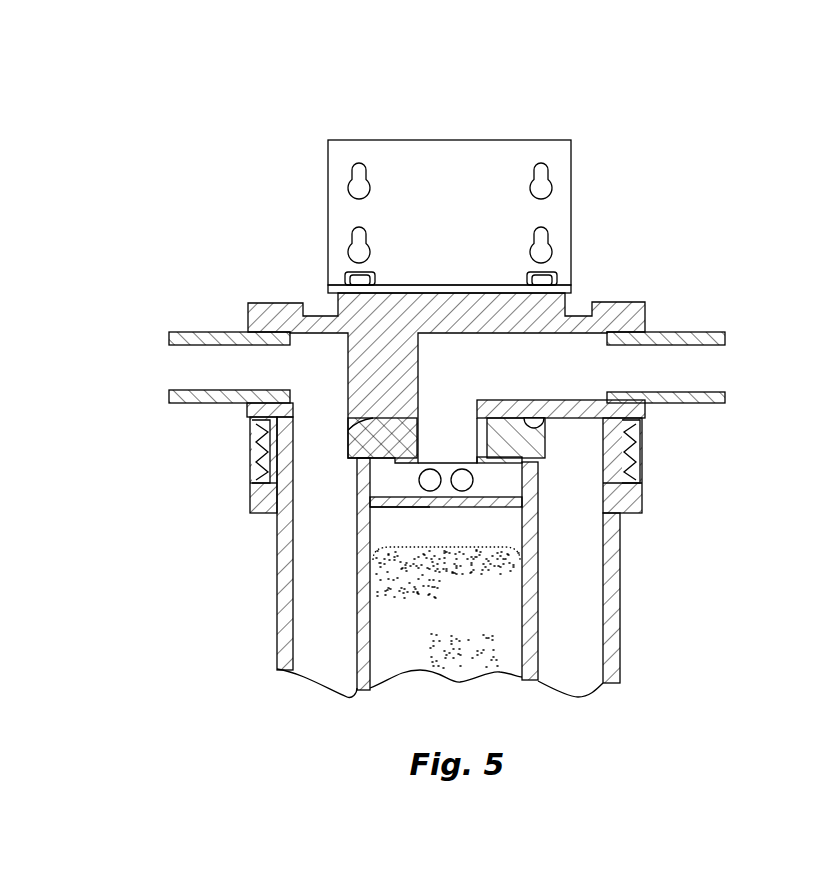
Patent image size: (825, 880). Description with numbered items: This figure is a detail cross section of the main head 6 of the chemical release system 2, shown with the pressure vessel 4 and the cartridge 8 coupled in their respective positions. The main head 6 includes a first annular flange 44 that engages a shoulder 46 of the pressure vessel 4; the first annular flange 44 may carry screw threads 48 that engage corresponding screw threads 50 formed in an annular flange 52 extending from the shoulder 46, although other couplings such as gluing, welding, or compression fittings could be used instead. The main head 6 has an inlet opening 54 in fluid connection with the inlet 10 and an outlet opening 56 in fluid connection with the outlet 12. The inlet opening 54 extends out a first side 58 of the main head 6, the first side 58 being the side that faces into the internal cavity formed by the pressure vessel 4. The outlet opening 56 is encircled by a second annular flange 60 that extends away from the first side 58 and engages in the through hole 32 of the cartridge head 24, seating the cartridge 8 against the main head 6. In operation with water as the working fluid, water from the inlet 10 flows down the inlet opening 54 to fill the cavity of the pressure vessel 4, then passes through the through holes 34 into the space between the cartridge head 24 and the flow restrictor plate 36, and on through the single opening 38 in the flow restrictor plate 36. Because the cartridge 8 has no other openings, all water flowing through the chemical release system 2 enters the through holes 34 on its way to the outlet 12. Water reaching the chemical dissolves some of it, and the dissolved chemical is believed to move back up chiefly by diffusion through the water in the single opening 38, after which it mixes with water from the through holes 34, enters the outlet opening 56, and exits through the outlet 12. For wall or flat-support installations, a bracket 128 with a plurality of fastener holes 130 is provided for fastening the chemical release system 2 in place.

The chemical release system 2 is at (268, 160).
The pressure vessel 4 is at (608, 578).
The main head 6 is at (628, 310).
The cartridge 8 is at (528, 638).
The inlet 10 is at (190, 372).
The outlet 12 is at (715, 370).
The cartridge head 24 is at (510, 432).
The through hole 32 is at (490, 458).
The through holes 34 is at (462, 480).
The flow restrictor plate 36 is at (382, 501).
The single opening 38 is at (448, 502).
The first annular flange 44 is at (282, 430).
The shoulder 46 is at (285, 484).
The screw threads 48 is at (620, 432).
The screw threads 50 is at (627, 458).
The annular flange 52 is at (258, 483).
The inlet opening 54 is at (337, 370).
The outlet opening 56 is at (432, 425).
The first side 58 is at (573, 418).
The second annular flange 60 is at (412, 458).
The bracket 128 is at (498, 188).
The fastener holes 130 is at (541, 245).